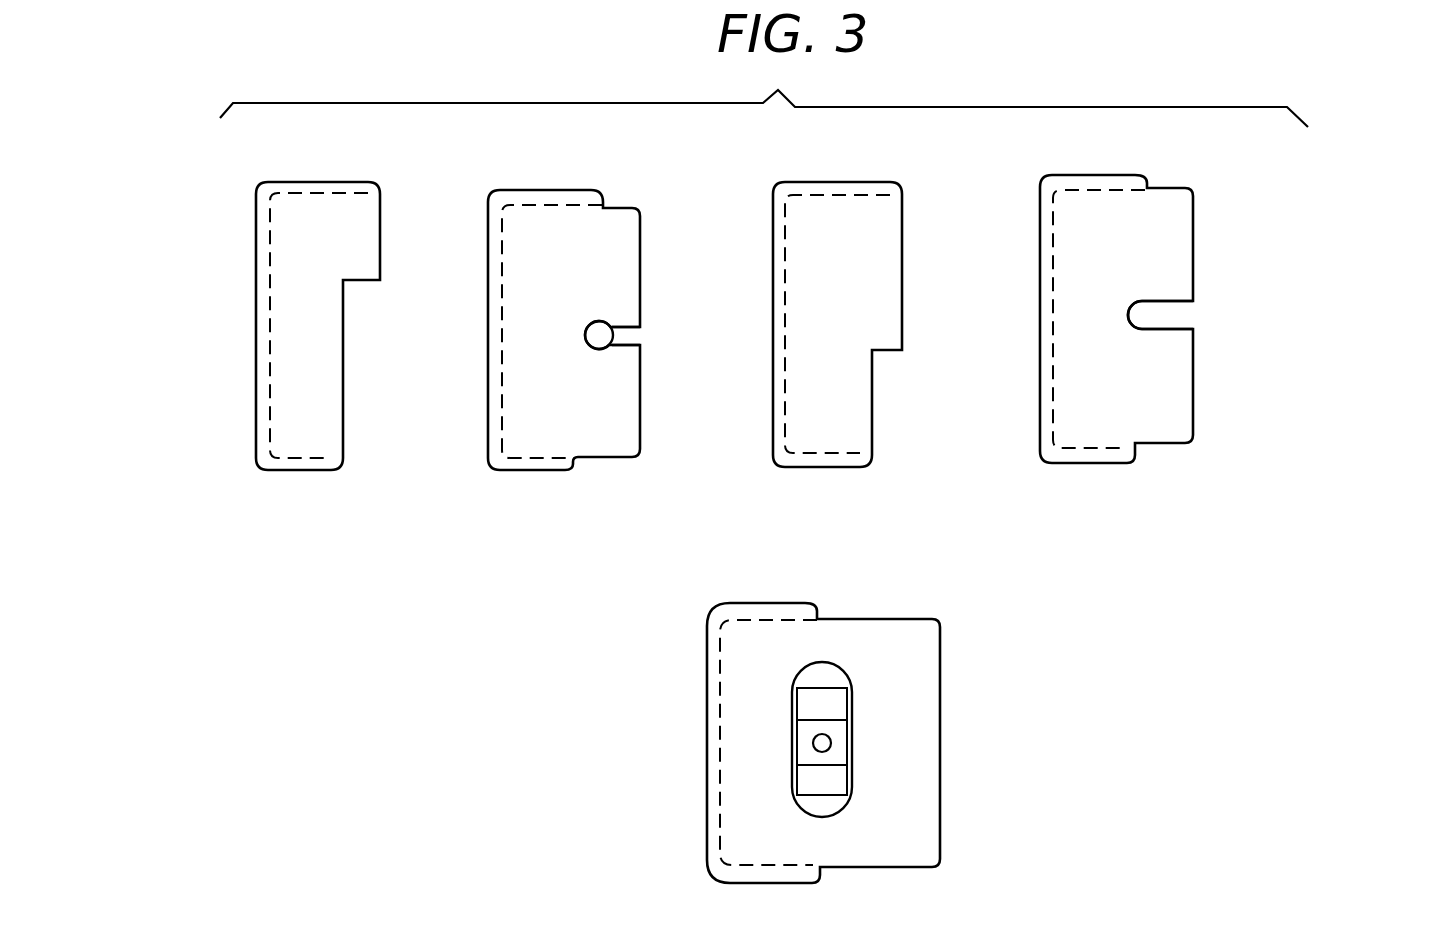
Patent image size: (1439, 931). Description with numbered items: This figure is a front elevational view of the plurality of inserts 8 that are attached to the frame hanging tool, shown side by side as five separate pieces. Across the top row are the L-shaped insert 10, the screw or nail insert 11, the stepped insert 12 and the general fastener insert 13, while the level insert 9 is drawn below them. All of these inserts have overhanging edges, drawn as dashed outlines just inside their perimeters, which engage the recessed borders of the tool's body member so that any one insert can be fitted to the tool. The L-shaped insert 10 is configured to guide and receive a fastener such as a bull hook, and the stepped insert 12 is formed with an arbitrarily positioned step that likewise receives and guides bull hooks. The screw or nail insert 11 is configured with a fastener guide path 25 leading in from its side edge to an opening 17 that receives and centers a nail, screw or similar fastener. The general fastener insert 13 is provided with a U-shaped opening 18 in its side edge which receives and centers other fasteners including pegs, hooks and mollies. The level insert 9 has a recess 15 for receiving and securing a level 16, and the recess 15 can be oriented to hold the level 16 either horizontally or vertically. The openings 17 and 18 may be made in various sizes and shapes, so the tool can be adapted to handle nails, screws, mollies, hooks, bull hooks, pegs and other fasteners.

The inserts 8 is at (1345, 152).
The level insert 9 is at (815, 727).
The L-shaped insert 10 is at (271, 299).
The screw or nail insert 11 is at (604, 335).
The stepped insert 12 is at (837, 330).
The general fastener insert 13 is at (1155, 326).
The recess 15 is at (838, 670).
The level 16 is at (812, 743).
The opening 17 is at (602, 340).
The U-shaped opening 18 is at (1168, 327).
The fastener guide path 25 is at (628, 337).